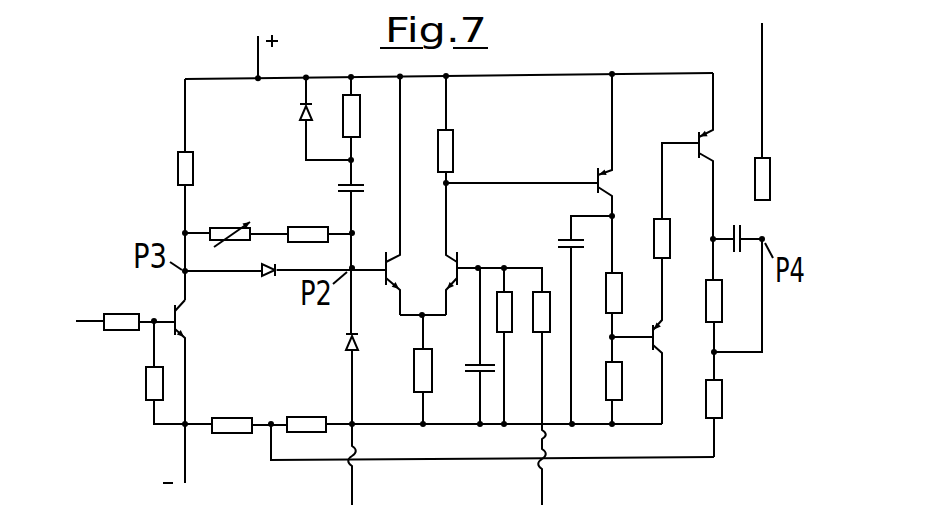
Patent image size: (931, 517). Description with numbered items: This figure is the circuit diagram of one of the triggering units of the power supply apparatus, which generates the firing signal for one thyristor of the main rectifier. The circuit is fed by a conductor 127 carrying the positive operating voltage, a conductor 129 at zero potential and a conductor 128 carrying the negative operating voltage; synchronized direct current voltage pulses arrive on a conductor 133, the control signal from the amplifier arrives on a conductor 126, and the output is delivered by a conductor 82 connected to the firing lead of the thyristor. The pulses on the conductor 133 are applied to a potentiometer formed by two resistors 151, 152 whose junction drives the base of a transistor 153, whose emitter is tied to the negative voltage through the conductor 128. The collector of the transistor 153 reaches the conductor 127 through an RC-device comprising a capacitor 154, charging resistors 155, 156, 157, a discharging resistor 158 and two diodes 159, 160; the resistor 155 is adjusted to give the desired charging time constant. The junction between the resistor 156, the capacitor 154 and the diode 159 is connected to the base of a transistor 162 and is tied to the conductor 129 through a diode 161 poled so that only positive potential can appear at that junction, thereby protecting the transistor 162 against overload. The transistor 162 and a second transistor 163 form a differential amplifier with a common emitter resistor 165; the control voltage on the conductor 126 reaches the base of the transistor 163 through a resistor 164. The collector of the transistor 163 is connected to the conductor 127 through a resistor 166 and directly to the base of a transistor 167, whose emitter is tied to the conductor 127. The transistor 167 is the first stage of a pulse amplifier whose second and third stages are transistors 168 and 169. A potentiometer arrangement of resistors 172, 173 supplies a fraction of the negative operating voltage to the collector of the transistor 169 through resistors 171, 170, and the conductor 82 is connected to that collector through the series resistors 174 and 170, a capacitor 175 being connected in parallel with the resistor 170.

The conductor 82 is at (757, 44).
The conductor 126 is at (537, 481).
The conductor 127 is at (252, 52).
The conductor 128 is at (151, 453).
The conductor 129 is at (348, 488).
The conductor 133 is at (92, 308).
The resistor 151 is at (128, 330).
The resistor 152 is at (145, 383).
The transistor 153 is at (185, 318).
The capacitor 154 is at (340, 184).
The charging resistor 155 is at (226, 227).
The charging resistor 156 is at (308, 220).
The charging resistor 157 is at (341, 100).
The discharging resistor 158 is at (177, 170).
The diode 159 is at (262, 273).
The diode 160 is at (300, 118).
The diode 161 is at (340, 345).
The transistor 162 is at (389, 275).
The transistor 163 is at (490, 237).
The resistor 164 is at (538, 290).
The common emitter resistor 165 is at (416, 372).
The resistor 166 is at (453, 146).
The transistor 167 is at (598, 172).
The transistor 168 is at (658, 337).
The transistor 169 is at (698, 136).
The resistor 170 is at (718, 308).
The resistor 171 is at (720, 393).
The potentiometer arrangement resistor 172 is at (232, 405).
The potentiometer arrangement resistor 173 is at (309, 405).
The series resistor 174 is at (770, 178).
The capacitor 175 is at (745, 232).